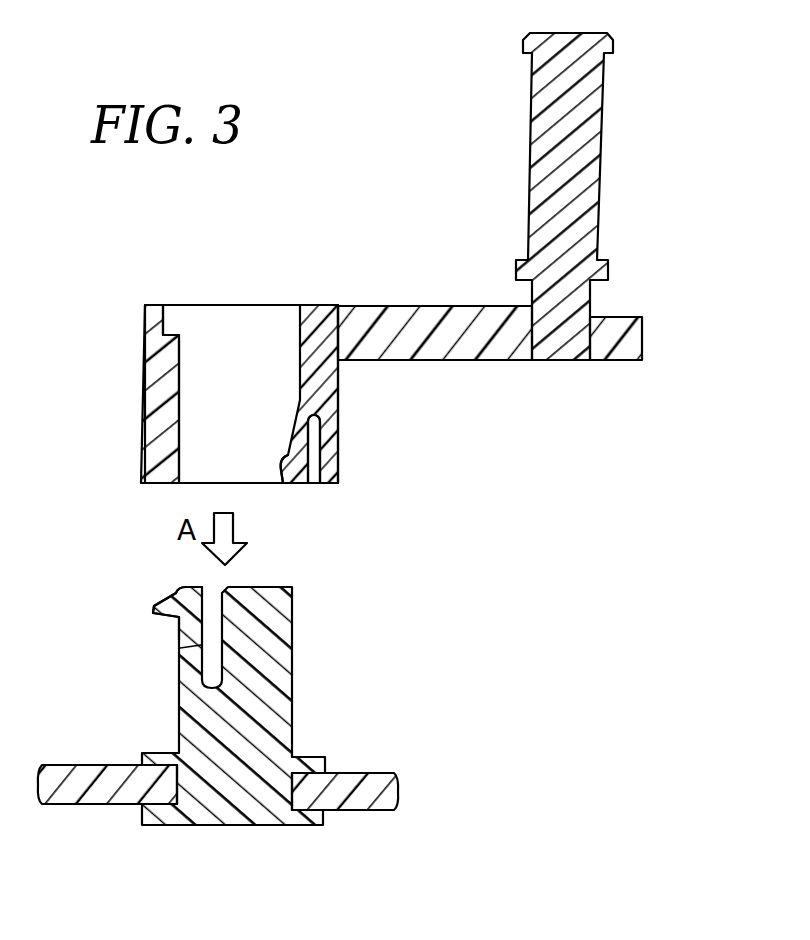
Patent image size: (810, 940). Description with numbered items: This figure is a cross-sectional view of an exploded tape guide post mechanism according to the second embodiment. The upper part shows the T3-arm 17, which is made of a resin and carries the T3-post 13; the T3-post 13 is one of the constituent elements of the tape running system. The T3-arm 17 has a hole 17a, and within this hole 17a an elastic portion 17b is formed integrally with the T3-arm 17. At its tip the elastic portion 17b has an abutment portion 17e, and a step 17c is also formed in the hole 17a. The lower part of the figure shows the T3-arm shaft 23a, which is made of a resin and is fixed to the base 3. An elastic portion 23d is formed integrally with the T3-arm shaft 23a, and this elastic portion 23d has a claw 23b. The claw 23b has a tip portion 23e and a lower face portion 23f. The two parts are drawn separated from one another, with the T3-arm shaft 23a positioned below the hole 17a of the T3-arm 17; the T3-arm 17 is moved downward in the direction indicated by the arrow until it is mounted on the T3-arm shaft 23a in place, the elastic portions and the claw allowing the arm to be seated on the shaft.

The base 3 is at (352, 771).
The T3-post 13 is at (596, 165).
The T3-arm 17 is at (455, 359).
The hole 17a is at (183, 363).
The elastic portion 17b is at (304, 443).
The step 17c is at (174, 336).
The abutment portion 17e is at (282, 466).
The T3-arm shaft 23a is at (280, 682).
The claw 23b is at (190, 592).
The elastic portion 23d is at (186, 650).
The tip portion 23e is at (156, 616).
The lower face portion 23f is at (178, 618).